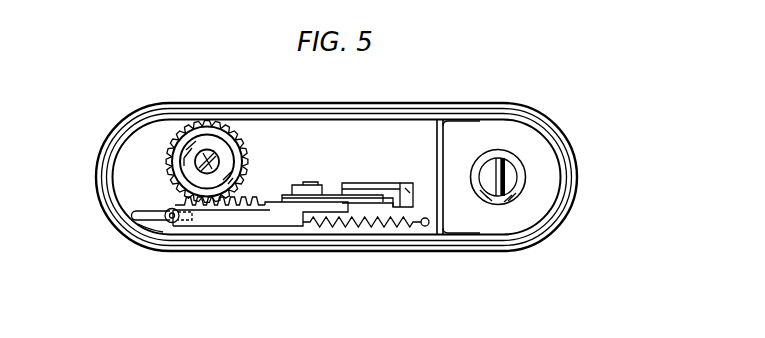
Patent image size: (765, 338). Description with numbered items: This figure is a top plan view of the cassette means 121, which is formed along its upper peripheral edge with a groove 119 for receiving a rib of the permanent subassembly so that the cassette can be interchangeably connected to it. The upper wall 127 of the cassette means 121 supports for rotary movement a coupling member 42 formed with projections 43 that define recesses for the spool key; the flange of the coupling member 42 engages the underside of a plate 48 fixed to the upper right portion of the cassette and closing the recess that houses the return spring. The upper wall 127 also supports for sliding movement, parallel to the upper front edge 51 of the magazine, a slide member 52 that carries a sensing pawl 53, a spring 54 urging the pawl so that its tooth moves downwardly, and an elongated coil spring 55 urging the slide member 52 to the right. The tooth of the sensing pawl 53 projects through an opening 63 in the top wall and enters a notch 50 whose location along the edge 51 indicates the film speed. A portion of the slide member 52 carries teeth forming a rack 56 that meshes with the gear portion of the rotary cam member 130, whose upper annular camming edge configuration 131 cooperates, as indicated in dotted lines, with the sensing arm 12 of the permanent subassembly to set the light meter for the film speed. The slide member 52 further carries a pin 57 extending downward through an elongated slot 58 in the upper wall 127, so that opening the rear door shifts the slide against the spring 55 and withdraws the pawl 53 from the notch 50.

The sensing arm 12 is at (190, 162).
The coupling member 42 is at (518, 190).
The projections 43 is at (508, 172).
The plate 48 is at (477, 133).
The notch 50 is at (402, 210).
The upper front edge 51 is at (410, 186).
The slide member 52 is at (277, 220).
The sensing pawl 53 is at (367, 196).
The spring 54 is at (295, 185).
The elongated coil spring 55 is at (337, 228).
The rack 56 is at (246, 203).
The pin 57 is at (169, 222).
The elongated slot 58 is at (135, 240).
The opening 63 is at (393, 187).
The groove 119 is at (553, 128).
The cassette means 121 is at (577, 177).
The upper wall 127 is at (358, 130).
The rotary cam member 130 is at (212, 135).
The camming edge configuration 131 is at (191, 124).